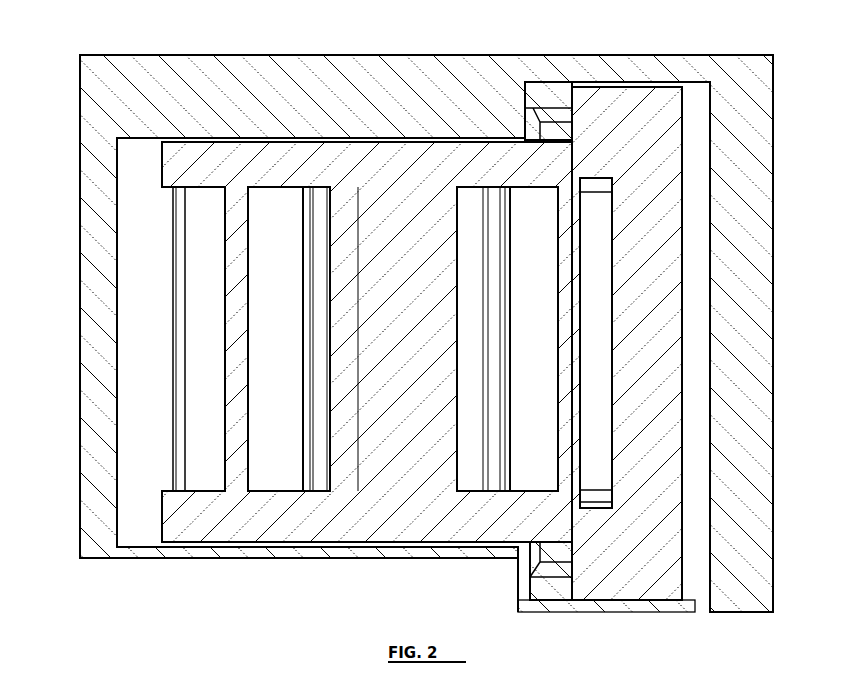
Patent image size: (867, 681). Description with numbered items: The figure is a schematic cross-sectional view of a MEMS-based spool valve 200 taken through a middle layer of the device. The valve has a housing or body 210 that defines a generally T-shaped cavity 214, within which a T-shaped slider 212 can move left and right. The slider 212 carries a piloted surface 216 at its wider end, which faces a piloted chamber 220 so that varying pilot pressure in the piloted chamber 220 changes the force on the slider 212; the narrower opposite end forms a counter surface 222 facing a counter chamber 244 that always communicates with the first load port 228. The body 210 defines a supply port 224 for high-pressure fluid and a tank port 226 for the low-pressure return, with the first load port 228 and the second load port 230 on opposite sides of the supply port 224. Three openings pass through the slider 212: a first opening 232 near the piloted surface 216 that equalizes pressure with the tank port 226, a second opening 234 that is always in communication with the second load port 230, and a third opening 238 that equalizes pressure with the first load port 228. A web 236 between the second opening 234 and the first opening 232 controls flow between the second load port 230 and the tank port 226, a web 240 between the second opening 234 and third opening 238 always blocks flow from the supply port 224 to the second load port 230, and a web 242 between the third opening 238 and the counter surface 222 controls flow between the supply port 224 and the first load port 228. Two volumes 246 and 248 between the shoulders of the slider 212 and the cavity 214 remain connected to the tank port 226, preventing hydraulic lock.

The MEMS-based spool valve 200 is at (335, 566).
The body 210 is at (177, 96).
The slider 212 is at (651, 140).
The cavity 214 is at (708, 110).
The piloted surface 216 is at (685, 209).
The piloted chamber 220 is at (688, 602).
The counter surface 222 is at (193, 330).
The supply port 224 is at (313, 222).
The tank port 226 is at (600, 195).
The first load port 228 is at (205, 432).
The second load port 230 is at (492, 320).
The first opening 232 is at (592, 486).
The second opening 234 is at (557, 203).
The web 236 is at (568, 322).
The third opening 238 is at (272, 207).
The web 240 is at (420, 185).
The web 242 is at (244, 412).
The counter chamber 244 is at (130, 440).
The volume 246 is at (534, 578).
The volume 248 is at (540, 110).